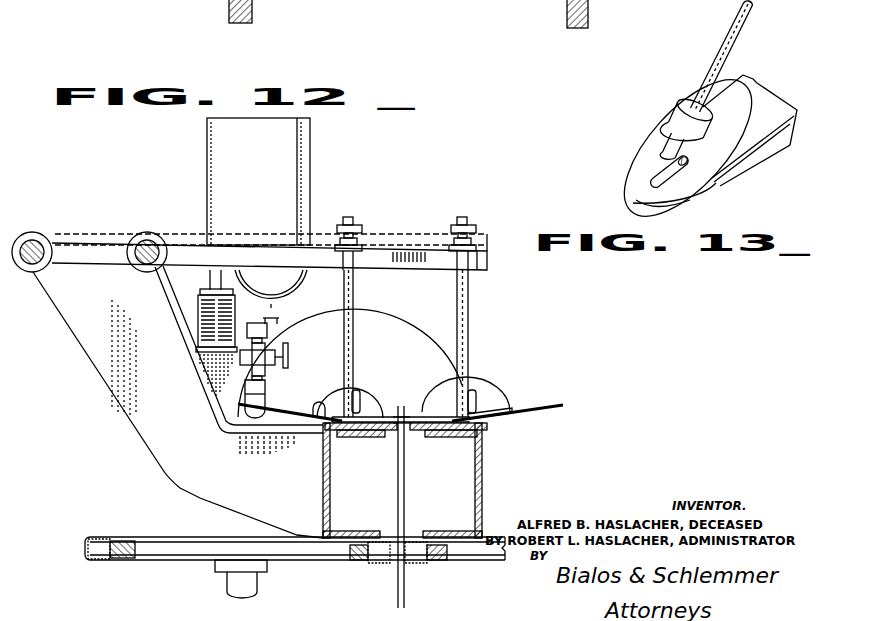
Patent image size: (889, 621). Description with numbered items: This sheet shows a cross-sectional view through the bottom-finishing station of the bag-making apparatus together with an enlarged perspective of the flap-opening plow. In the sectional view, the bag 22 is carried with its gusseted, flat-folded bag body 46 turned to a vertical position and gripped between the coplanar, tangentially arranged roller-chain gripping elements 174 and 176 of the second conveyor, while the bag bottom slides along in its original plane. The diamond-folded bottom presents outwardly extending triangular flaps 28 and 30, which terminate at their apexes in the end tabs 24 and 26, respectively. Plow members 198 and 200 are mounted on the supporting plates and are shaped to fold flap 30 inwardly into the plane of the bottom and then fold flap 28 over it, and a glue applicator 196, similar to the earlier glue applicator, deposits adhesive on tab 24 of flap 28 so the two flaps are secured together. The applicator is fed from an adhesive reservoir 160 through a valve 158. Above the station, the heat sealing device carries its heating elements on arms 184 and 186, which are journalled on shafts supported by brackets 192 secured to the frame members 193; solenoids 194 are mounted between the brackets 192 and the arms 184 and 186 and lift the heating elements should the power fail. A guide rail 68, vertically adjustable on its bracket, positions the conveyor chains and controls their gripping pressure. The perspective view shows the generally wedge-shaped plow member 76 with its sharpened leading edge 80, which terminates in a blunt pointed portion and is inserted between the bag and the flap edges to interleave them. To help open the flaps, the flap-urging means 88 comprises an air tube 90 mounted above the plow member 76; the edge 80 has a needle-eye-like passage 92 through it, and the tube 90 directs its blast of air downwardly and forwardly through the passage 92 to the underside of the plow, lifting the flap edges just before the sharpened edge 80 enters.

In FIG. 12, the bag 22 is at (407, 410).
In FIG. 12, the end tab 24 is at (285, 412).
In FIG. 12, the end tab 26 is at (543, 406).
In FIG. 12, the triangular flap 28 is at (322, 403).
In FIG. 12, the triangular flap 30 is at (490, 410).
In FIG. 12, the bag body 46 is at (398, 492).
In FIG. 12, the guide rail 68 is at (228, 10).
In FIG. 13, the guide rail 68 is at (589, 5).
In FIG. 13, the plow member 76 is at (767, 97).
In FIG. 13, the sharpened leading edge 80 is at (627, 203).
In FIG. 13, the flap-urging means 88 is at (677, 106).
In FIG. 13, the air tube 90 is at (727, 42).
In FIG. 13, the passage 92 is at (674, 170).
In FIG. 12, the valve 158 is at (262, 346).
In FIG. 12, the adhesive reservoir 160 is at (273, 196).
In FIG. 12, the gripping element 174 is at (102, 537).
In FIG. 12, the gripping element 176 is at (421, 565).
In FIG. 12, the arm 184 is at (78, 258).
In FIG. 12, the arm 186 is at (261, 258).
In FIG. 12, the bracket 192 is at (80, 343).
In FIG. 12, the frame member 193 is at (325, 490).
In FIG. 12, the solenoid 194 is at (199, 325).
In FIG. 12, the glue applicator 196 is at (266, 388).
In FIG. 12, the plow member 198 is at (488, 390).
In FIG. 12, the plow member 200 is at (388, 323).